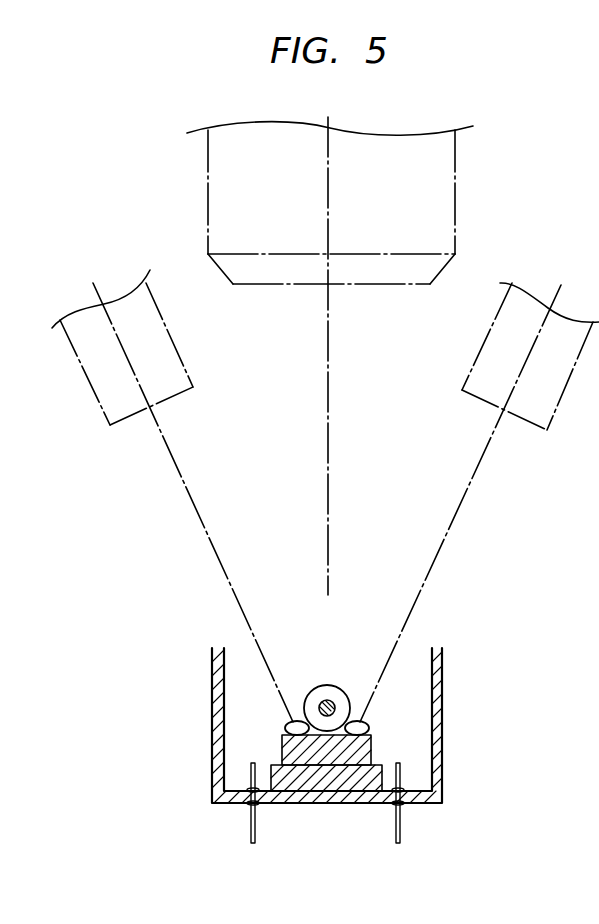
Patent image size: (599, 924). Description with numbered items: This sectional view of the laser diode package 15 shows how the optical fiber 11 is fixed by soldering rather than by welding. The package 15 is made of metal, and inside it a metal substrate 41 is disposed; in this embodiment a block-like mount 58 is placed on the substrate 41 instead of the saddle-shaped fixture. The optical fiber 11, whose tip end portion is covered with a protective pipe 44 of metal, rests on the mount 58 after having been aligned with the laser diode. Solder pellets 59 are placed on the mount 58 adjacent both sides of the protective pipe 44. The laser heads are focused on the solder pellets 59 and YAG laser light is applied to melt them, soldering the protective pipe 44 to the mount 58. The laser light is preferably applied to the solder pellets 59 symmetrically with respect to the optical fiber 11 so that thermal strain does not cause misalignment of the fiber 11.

The optical fiber 11 is at (334, 703).
The package 15 is at (442, 767).
The metal substrate 41 is at (307, 783).
The protective pipe 44 is at (323, 695).
The block-like mount 58 is at (333, 750).
The solder pellets 59 is at (284, 728).